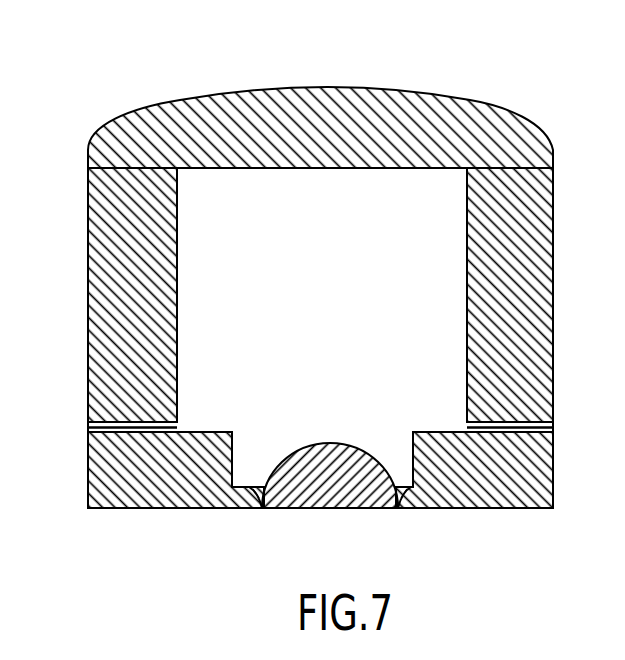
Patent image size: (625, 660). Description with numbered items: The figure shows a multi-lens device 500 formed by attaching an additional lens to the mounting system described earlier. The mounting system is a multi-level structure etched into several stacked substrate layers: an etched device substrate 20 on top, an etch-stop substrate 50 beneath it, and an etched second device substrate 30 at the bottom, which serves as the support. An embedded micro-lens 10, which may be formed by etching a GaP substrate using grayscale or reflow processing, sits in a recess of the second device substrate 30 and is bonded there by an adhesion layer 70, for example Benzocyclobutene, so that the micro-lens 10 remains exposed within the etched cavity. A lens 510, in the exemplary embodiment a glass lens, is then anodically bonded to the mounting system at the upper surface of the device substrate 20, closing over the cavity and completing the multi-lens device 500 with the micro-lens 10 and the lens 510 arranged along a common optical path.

The multi-lens device 500 is at (447, 80).
The lens 510 is at (151, 108).
The device substrate 20 is at (90, 257).
The etch-stop substrate 50 is at (90, 429).
The second device substrate 30 is at (108, 500).
The micro-lens 10 is at (332, 495).
The adhesion layer 70 is at (262, 497).